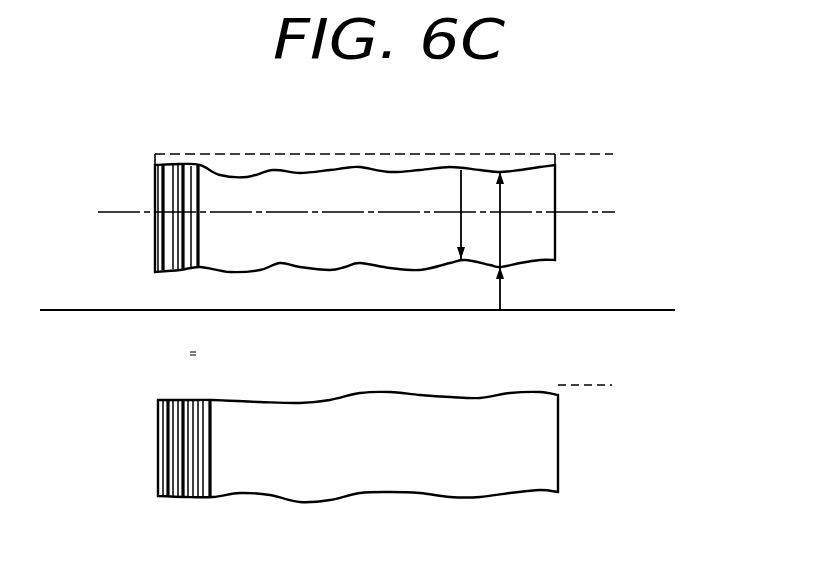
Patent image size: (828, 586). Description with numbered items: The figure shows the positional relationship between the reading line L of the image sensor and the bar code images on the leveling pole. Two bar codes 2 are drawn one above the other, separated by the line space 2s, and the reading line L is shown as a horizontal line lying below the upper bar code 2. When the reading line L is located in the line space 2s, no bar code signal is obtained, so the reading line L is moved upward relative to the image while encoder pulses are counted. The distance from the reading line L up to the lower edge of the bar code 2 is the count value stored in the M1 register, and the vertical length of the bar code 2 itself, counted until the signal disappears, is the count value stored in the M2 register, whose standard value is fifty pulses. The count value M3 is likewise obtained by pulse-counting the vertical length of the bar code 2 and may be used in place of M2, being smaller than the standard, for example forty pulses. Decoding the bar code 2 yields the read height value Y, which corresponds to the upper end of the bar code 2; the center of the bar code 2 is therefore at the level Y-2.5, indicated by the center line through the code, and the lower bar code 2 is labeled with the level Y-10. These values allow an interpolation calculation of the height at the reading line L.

The bar code 2 is at (155, 190).
The line space 2s is at (185, 352).
The M1 register M1 is at (523, 261).
The M2 register M2 is at (519, 192).
The count value M3 is at (437, 214).
The reading line L is at (642, 310).
The read height value Y is at (396, 152).
The center of the bar code Y-2.5 is at (398, 215).
The reference level Y-10 is at (622, 388).